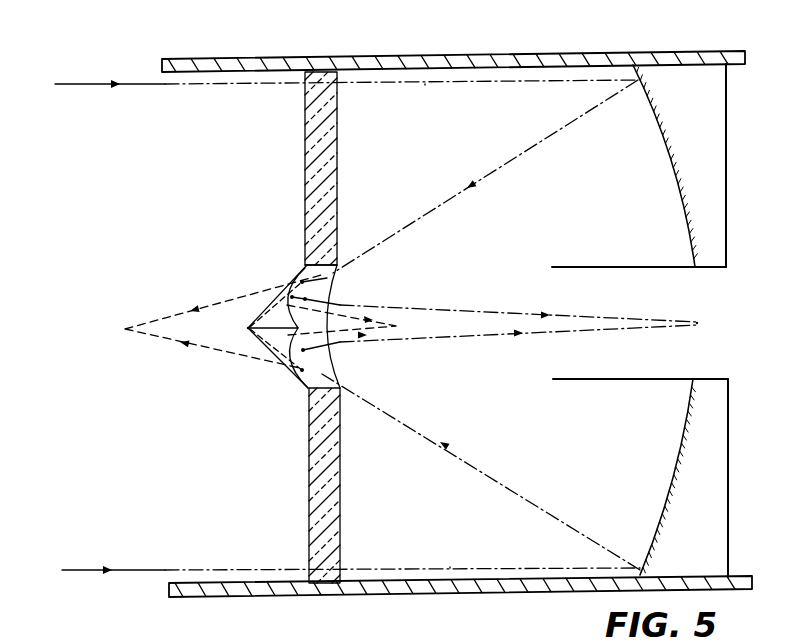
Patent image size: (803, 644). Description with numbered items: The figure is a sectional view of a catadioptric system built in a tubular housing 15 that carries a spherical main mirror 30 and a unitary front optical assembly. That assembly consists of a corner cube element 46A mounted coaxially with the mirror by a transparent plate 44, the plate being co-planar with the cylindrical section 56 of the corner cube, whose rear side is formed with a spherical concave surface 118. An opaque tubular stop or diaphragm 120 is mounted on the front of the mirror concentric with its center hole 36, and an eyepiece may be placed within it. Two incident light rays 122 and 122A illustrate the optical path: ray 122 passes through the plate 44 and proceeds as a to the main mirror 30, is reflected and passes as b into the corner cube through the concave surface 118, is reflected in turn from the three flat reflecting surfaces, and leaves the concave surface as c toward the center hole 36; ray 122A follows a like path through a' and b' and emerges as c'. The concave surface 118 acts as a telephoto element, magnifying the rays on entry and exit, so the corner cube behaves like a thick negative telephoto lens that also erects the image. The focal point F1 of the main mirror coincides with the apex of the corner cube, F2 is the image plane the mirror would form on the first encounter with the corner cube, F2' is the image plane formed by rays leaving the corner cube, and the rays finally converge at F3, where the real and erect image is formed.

The tubular housing 15 is at (370, 57).
The spherical main mirror 30 is at (730, 170).
The center hole 36 is at (712, 268).
The transparent plate 44 is at (337, 145).
The cylindrical section 56 is at (320, 262).
The corner cube element 46A is at (257, 312).
The concave surface 118 is at (333, 292).
The tubular stop or diaphragm 120 is at (612, 267).
The incident light ray 122 is at (82, 84).
The incident light ray 122A is at (82, 570).
The focal point of the main mirror F1 is at (248, 328).
The first image plane F2 is at (187, 321).
The second image plane F2' is at (346, 347).
The final focus point F3 is at (697, 322).
The ray segment a is at (416, 101).
The ray segment a' is at (439, 545).
The ray segment b is at (485, 176).
The ray segment b' is at (481, 472).
The ray segment c is at (500, 348).
The ray segment c' is at (501, 303).